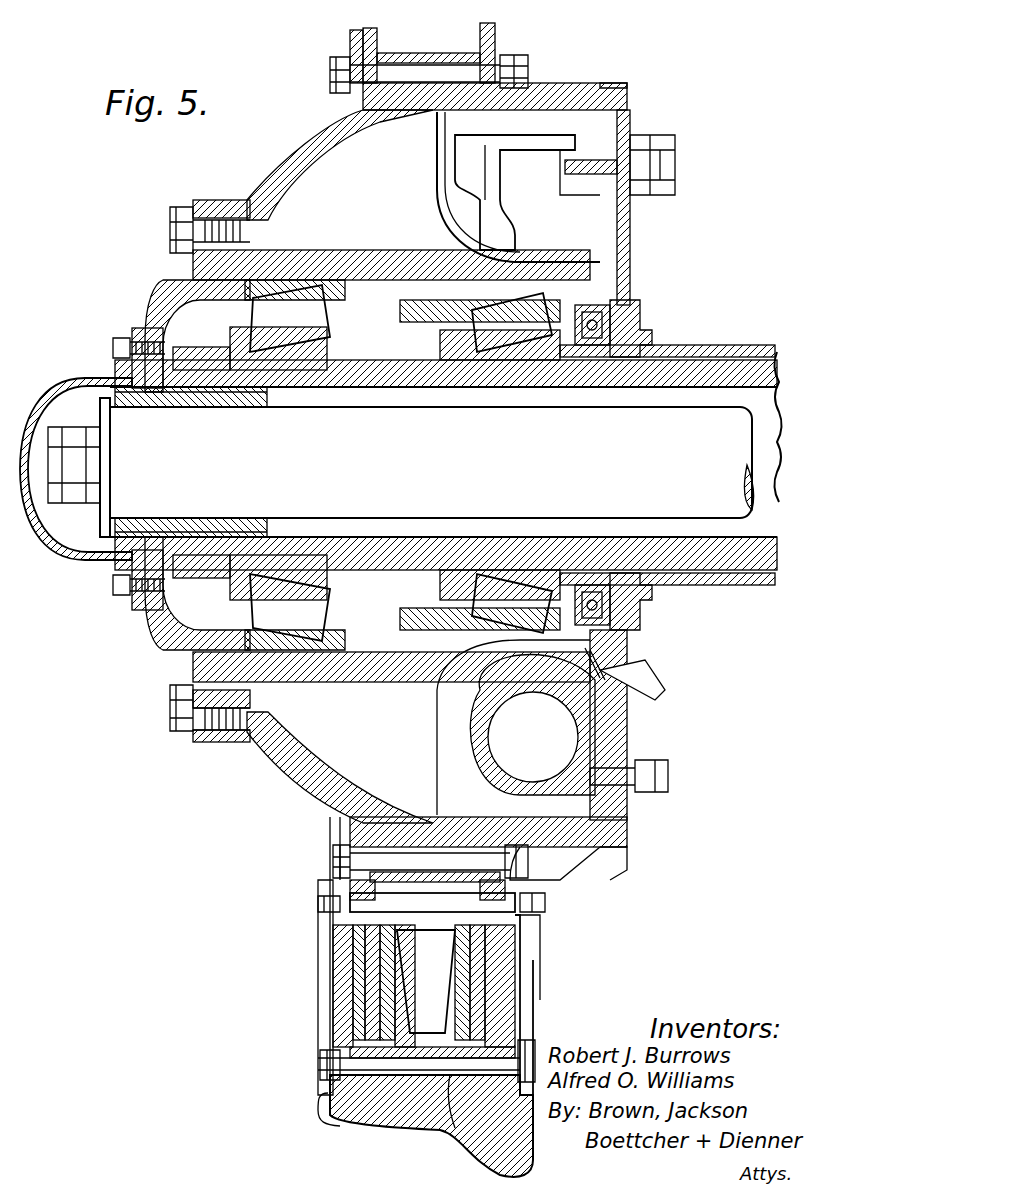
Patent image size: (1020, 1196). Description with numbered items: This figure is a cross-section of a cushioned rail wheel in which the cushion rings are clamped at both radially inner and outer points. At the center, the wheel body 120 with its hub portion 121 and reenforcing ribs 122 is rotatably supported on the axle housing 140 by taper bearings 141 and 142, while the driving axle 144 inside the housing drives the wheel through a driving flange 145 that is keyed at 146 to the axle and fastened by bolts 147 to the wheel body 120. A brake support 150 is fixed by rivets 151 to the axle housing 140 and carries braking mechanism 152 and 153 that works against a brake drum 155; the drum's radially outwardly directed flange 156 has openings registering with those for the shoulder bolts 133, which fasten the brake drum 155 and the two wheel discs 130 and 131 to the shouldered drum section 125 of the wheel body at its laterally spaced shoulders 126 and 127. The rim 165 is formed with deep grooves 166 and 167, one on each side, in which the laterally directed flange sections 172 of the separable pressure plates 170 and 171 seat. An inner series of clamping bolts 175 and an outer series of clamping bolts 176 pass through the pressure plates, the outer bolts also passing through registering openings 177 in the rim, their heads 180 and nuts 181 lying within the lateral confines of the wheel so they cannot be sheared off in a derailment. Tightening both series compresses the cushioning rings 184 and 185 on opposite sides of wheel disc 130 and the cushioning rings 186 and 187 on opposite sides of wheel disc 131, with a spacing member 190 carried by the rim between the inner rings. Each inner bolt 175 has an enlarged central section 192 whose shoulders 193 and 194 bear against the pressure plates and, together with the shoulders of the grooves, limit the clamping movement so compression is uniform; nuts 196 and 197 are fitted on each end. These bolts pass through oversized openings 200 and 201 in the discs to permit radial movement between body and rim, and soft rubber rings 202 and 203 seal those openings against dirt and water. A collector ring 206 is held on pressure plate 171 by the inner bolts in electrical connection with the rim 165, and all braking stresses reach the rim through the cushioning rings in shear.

The central wheel body 120 is at (293, 158).
The bearing retainer flange 121 is at (394, 260).
The reenforcing ribs 122 is at (371, 463).
The shouldered drum section 125 is at (418, 826).
The shoulder 126 is at (345, 884).
The shoulder 127 is at (510, 772).
The wheel disc 130 is at (330, 1012).
The wheel disc 131 is at (528, 958).
The shoulder bolts 133 is at (333, 855).
The axle housing 140 is at (690, 367).
The taper bearing 141 is at (490, 323).
The taper bearing 142 is at (262, 320).
The driving axle 144 is at (388, 425).
The driving flange 145 is at (160, 622).
The key 146 is at (205, 417).
The bolts 147 is at (170, 240).
The brake support 150 is at (620, 727).
The rivets 151 is at (632, 318).
The braking mechanism 152 is at (545, 198).
The braking mechanism 153 is at (556, 692).
The brake drum 155 is at (632, 100).
The radially outwardly directed flange 156 is at (530, 881).
The rim 165 is at (372, 1128).
The groove 166 is at (340, 1127).
The groove 167 is at (465, 1136).
The pressure plate 170 is at (340, 987).
The pressure plate 171 is at (540, 975).
The laterally directed flange section 172 is at (318, 1097).
The inner clamping bolts 175 is at (555, 913).
The outer clamping bolts 176 is at (418, 1060).
The registering openings 177 is at (450, 1128).
The bolt heads 180 is at (320, 1062).
The nuts 181 is at (545, 1045).
The cushioning ring 184 is at (365, 998).
The cushioning ring 185 is at (360, 1018).
The cushioning ring 186 is at (520, 988).
The cushioning ring 187 is at (527, 1005).
The spacing member 190 is at (345, 970).
The enlarged central section 192 is at (430, 912).
The shoulder 193 is at (432, 903).
The shoulder 194 is at (478, 904).
The nut 196 is at (318, 905).
The nut 197 is at (548, 895).
The opening 200 is at (340, 930).
The opening 201 is at (555, 932).
The soft rubber ring 202 is at (350, 40).
The soft rubber ring 203 is at (510, 33).
The collector ring 206 is at (622, 858).